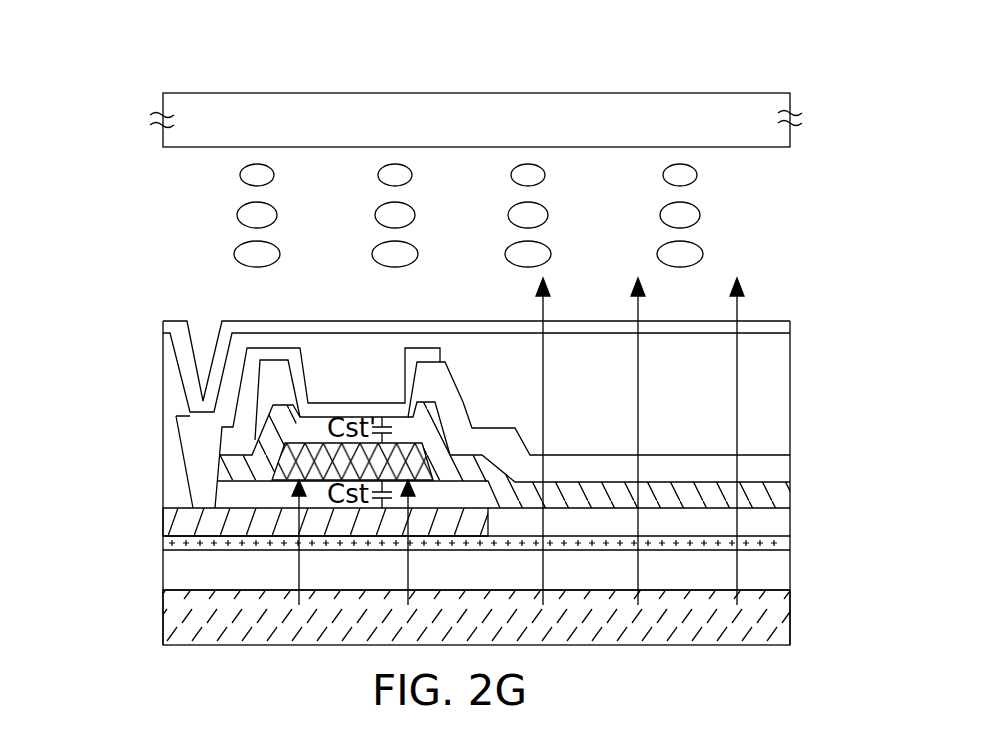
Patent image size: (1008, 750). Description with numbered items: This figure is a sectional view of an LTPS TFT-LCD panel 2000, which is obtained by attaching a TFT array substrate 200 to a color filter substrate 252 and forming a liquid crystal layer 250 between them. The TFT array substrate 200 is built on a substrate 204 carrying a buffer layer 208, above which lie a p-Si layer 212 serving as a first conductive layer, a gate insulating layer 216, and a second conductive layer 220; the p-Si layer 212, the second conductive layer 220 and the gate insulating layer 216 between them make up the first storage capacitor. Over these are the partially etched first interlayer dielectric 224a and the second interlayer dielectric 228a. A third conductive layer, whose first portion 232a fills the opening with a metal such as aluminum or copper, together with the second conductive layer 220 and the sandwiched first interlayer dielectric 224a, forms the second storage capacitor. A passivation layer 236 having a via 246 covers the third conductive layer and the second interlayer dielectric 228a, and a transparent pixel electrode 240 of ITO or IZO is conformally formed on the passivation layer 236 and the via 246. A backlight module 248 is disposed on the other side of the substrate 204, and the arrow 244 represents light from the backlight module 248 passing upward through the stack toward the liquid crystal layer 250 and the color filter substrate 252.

The LTPS TFT-LCD panel 2000 is at (123, 56).
The TFT array substrate 200 is at (76, 320).
The color filter substrate 252 is at (793, 101).
The liquid crystal layer 250 is at (798, 160).
The via 246 is at (204, 330).
The arrow 244 is at (746, 305).
The transparent pixel electrode 240 is at (775, 328).
The passivation layer 236 is at (775, 388).
The first portion of third conductive layer 232a is at (205, 444).
The second interlayer dielectric 228a is at (775, 469).
The first interlayer dielectric 224a is at (775, 494).
The second conductive layer 220 is at (276, 466).
The gate insulating layer 216 is at (775, 520).
The p-Si layer 212 is at (178, 518).
The buffer layer 208 is at (775, 544).
The substrate 204 is at (775, 570).
The backlight module 248 is at (775, 617).